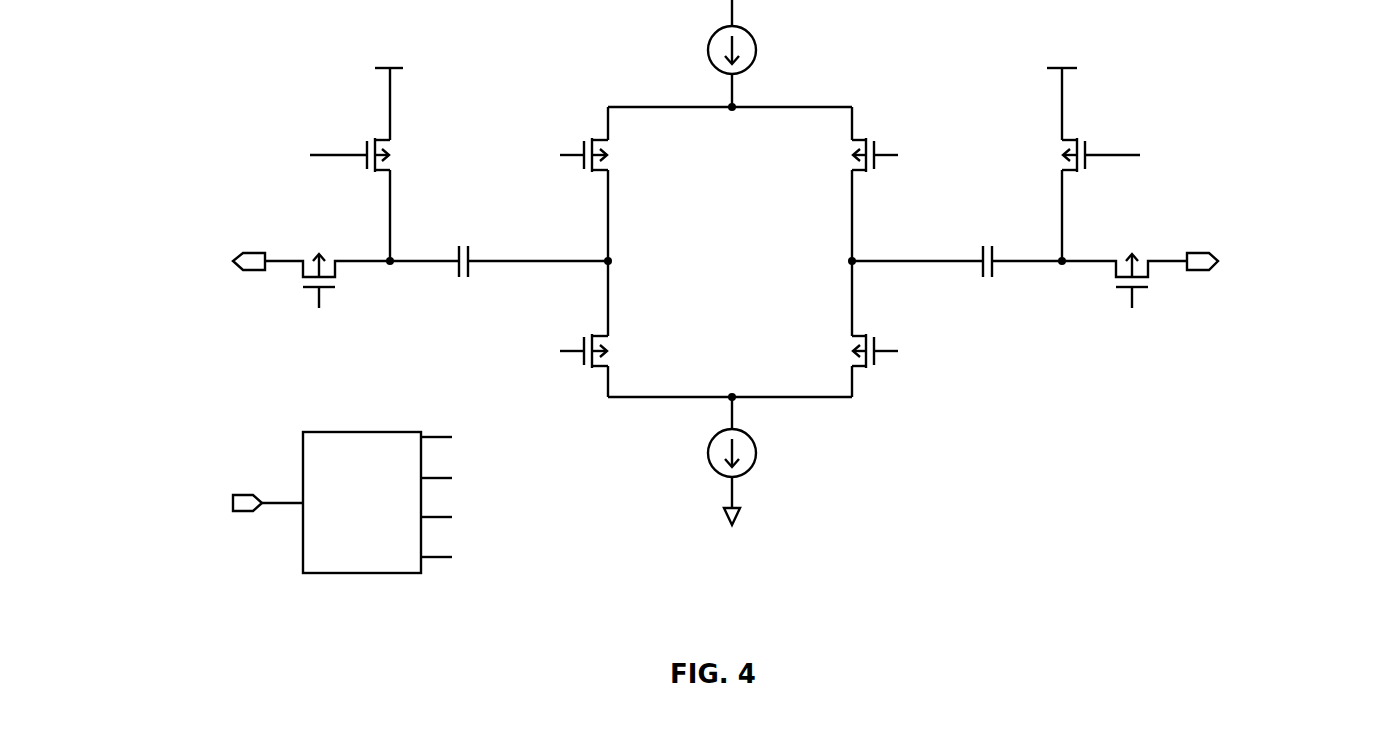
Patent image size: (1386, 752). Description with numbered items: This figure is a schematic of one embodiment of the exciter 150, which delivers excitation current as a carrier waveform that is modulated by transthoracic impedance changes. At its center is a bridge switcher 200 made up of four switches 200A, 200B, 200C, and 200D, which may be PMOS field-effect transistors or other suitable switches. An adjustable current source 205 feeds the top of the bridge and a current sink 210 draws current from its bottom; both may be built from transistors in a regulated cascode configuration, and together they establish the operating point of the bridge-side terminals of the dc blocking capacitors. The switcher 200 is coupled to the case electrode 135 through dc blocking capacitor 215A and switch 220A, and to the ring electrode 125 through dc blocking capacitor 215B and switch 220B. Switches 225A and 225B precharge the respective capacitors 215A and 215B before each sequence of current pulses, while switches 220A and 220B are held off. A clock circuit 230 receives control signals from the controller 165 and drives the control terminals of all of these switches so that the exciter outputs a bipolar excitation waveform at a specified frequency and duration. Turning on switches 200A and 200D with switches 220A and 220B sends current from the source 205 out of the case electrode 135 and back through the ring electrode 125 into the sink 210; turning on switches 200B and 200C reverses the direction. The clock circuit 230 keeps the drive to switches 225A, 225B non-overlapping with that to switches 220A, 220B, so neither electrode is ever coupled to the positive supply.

The ring electrode 125 is at (1284, 261).
The case electrode 135 is at (163, 264).
The exciter 150 is at (1030, 455).
The controller 165 is at (173, 504).
The bridge switcher 200 is at (595, 87).
The switch 200A is at (613, 172).
The switch 200B is at (842, 172).
The switch 200C is at (615, 337).
The switch 200D is at (847, 337).
The adjustable current source 205 is at (708, 50).
The current sink 210 is at (708, 453).
The dc blocking capacitor 215A is at (464, 244).
The dc blocking capacitor 215B is at (986, 244).
The switch 220A is at (332, 249).
The switch 220B is at (1146, 247).
The switch 225A is at (400, 138).
The switch 225B is at (1053, 140).
The clock circuit 230 is at (364, 429).